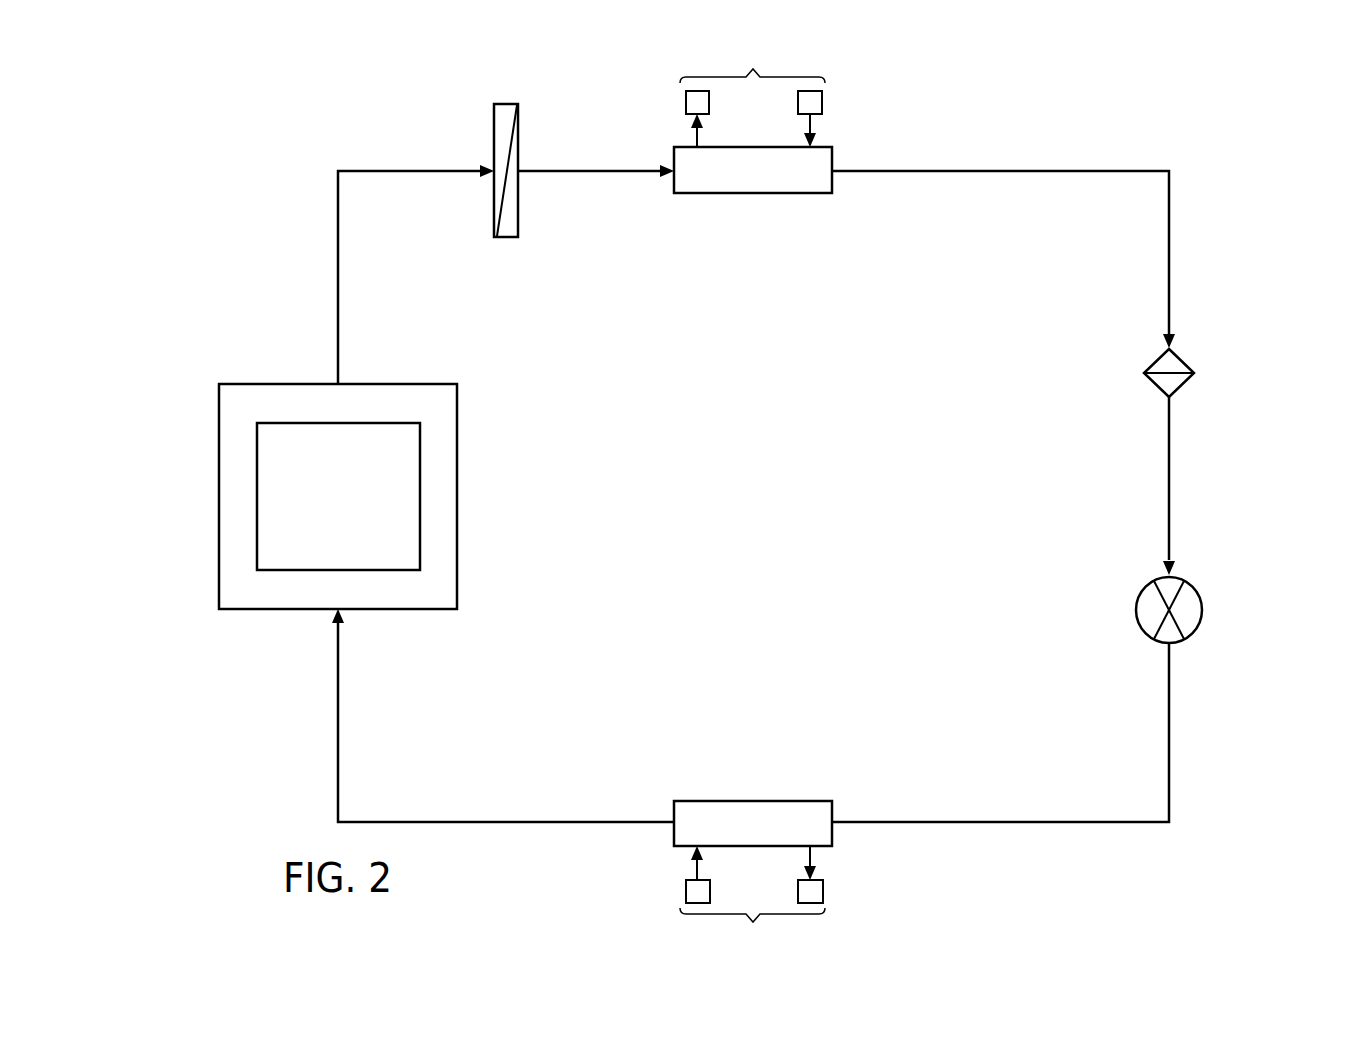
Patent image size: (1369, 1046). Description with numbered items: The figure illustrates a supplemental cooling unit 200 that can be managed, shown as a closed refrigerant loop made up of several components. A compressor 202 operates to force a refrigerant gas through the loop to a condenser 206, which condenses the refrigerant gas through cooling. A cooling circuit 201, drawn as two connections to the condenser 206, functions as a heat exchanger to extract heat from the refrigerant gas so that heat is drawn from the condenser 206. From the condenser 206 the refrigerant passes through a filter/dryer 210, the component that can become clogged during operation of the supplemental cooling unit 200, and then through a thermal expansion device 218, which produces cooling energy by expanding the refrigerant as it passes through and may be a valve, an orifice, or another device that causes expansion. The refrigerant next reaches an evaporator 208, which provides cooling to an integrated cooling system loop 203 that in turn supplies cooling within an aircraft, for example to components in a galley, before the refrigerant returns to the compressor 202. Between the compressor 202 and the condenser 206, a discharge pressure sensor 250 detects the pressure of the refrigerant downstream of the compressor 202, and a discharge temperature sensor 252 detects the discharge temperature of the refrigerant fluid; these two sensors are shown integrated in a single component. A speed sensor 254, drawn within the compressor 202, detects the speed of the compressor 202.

The supplemental cooling unit 200 is at (320, 93).
The cooling circuit 201 is at (753, 93).
The compressor 202 is at (208, 569).
The integrated cooling system (ICS) loop 203 is at (852, 941).
The condenser 206 is at (752, 194).
The evaporator 208 is at (753, 800).
The filter/dryer 210 is at (1181, 358).
The thermal expansion device 218 is at (1137, 607).
The discharge pressure sensor 250 is at (494, 141).
The discharge temperature sensor 252 is at (518, 200).
The speed sensor 254 is at (358, 540).